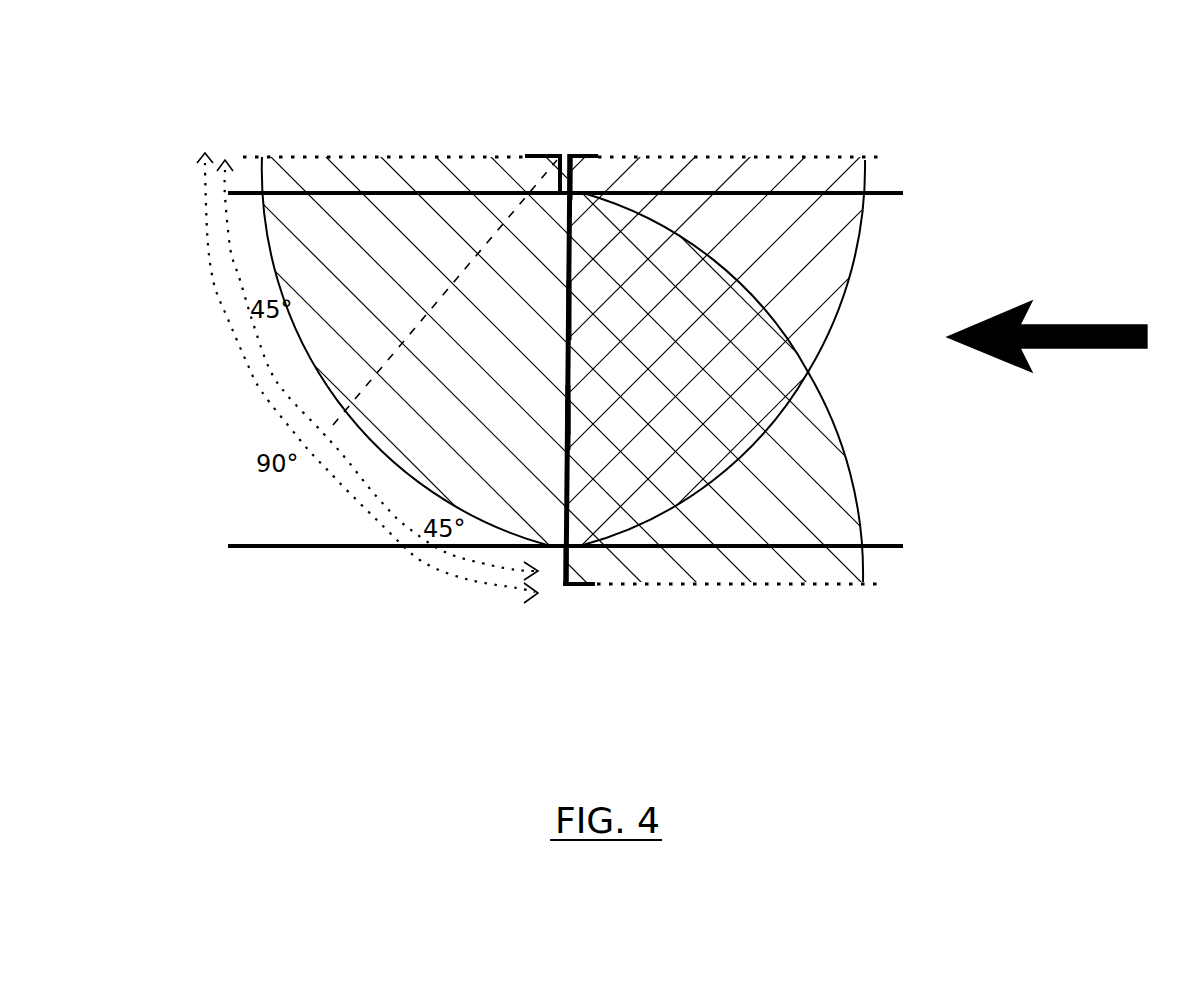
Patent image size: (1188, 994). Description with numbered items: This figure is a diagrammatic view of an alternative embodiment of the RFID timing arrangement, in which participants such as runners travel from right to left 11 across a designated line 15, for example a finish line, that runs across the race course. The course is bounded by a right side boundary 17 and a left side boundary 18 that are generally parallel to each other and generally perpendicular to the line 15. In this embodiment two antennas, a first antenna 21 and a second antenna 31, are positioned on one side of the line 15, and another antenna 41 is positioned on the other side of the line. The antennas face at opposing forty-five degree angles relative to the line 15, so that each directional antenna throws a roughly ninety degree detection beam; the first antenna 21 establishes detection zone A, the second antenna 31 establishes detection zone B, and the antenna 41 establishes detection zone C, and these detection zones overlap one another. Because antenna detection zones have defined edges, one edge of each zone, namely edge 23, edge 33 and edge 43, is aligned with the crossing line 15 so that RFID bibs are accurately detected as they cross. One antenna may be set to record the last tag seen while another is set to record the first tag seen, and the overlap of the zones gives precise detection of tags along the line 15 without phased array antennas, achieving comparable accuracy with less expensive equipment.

The direction of travel 11 is at (1083, 323).
The line 15 is at (563, 382).
The right side boundary 17 is at (892, 192).
The left side boundary 18 is at (343, 548).
The first antenna 21 is at (575, 153).
The edge of detection zone 23 is at (567, 312).
The second antenna 31 is at (560, 153).
The edge of detection zone 33 is at (563, 423).
The antenna 41 is at (571, 586).
The edge of detection zone 43 is at (570, 410).
The detection zone A is at (746, 231).
The detection zone B is at (407, 173).
The detection zone C is at (785, 478).